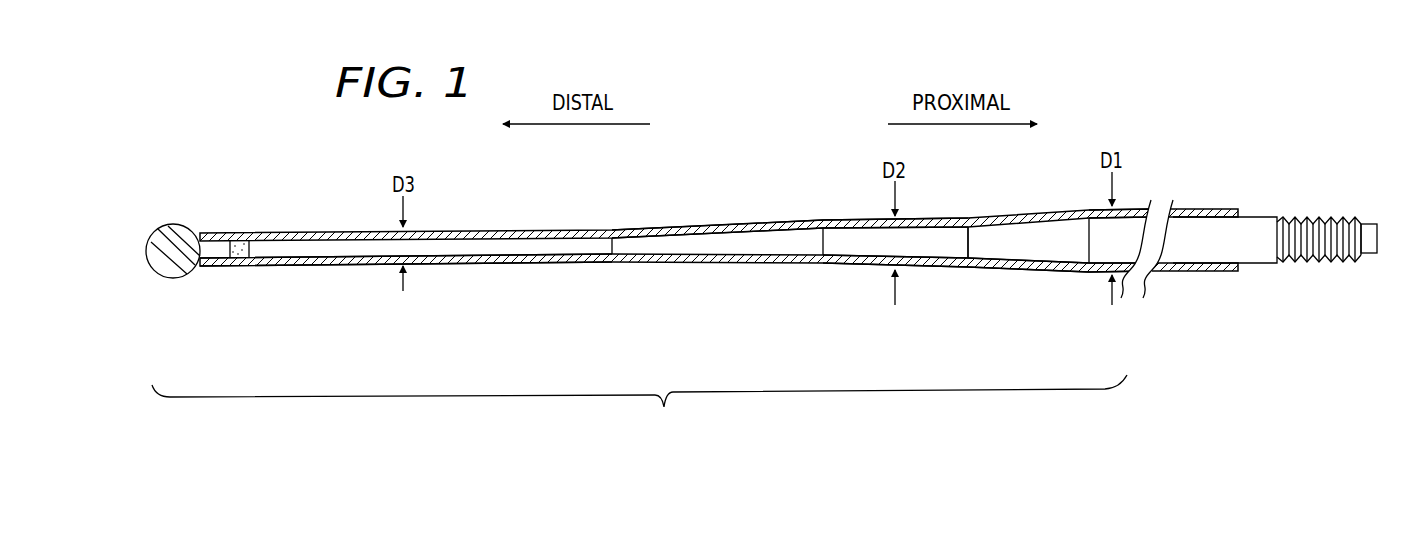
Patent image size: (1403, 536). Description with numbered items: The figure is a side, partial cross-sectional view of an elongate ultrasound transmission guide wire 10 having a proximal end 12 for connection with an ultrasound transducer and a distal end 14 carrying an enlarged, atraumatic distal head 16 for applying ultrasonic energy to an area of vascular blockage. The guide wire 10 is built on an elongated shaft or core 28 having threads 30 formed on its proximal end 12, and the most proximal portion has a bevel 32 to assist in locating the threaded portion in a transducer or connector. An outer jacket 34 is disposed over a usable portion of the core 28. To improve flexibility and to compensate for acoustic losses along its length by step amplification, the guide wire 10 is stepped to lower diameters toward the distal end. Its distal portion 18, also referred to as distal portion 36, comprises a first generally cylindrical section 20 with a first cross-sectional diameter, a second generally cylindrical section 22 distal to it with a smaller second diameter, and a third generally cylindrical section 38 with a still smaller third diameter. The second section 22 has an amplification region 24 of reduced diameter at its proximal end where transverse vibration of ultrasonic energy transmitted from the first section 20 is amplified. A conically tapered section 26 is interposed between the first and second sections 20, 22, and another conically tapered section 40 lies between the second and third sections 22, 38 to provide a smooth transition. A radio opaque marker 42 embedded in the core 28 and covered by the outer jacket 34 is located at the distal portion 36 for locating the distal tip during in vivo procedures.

The ultrasound transmission guide wire 10 is at (714, 199).
The proximal end 12 is at (1340, 226).
The distal end 14 is at (199, 272).
The distal head 16 is at (146, 251).
The distal portion 18 is at (1126, 208).
The first generally cylindrical section 20 is at (1119, 274).
The second generally cylindrical section 22 is at (926, 214).
The amplification region 24 is at (968, 268).
The conically tapered section 26 is at (1045, 268).
The core 28 is at (1248, 233).
The threads 30 is at (1312, 263).
The bevel 32 is at (1370, 256).
The outer jacket 34 is at (1195, 272).
The distal portion 36 is at (639, 407).
The third generally cylindrical section 38 is at (533, 251).
The conically tapered section 40 is at (718, 263).
The radio opaque marker 42 is at (240, 247).